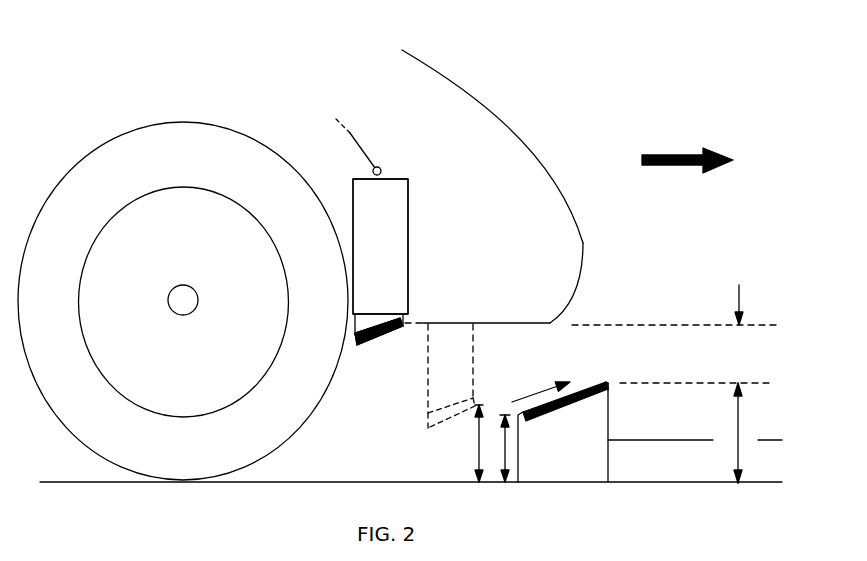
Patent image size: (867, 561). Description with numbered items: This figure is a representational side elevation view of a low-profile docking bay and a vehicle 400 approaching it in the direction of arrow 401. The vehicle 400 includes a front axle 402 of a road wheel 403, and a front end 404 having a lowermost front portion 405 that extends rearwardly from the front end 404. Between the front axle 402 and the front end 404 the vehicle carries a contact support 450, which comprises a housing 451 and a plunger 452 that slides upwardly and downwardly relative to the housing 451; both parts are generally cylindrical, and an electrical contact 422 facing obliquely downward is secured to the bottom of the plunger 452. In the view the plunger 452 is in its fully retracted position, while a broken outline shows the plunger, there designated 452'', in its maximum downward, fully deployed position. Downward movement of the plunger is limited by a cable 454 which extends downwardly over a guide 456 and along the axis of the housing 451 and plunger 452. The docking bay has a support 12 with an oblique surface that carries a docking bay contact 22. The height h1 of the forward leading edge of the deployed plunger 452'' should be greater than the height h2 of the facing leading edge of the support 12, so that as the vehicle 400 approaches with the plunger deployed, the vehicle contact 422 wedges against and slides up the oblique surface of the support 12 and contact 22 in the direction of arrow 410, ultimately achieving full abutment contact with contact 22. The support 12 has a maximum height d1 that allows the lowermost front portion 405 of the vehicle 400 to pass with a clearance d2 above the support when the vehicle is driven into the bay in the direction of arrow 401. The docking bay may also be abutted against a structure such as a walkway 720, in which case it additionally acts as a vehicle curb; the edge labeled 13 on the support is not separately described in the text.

The vehicle 400 is at (520, 106).
The arrow 401 is at (673, 157).
The front axle 402 is at (184, 297).
The road wheel 403 is at (210, 122).
The front end 404 is at (585, 250).
The lowermost front portion 405 is at (513, 323).
The arrow 410 is at (533, 383).
The docking bay support 12 is at (612, 408).
The curb top edge 13 is at (605, 383).
The docking bay contact 22 is at (559, 408).
The vehicle electrical contact 422 is at (378, 340).
The contact support 450 is at (412, 221).
The housing 451 is at (397, 250).
The plunger 452 is at (410, 310).
The plunger in fully deployed position 452'' is at (484, 376).
The cable 454 is at (357, 139).
The guide 456 is at (372, 170).
The walkway 720 is at (647, 470).
The height of forward leading edge of plunger h1 is at (479, 433).
The height of facing leading edge of docking bay support h2 is at (507, 452).
The maximum height of support d1 is at (753, 433).
The clearance d2 is at (755, 360).